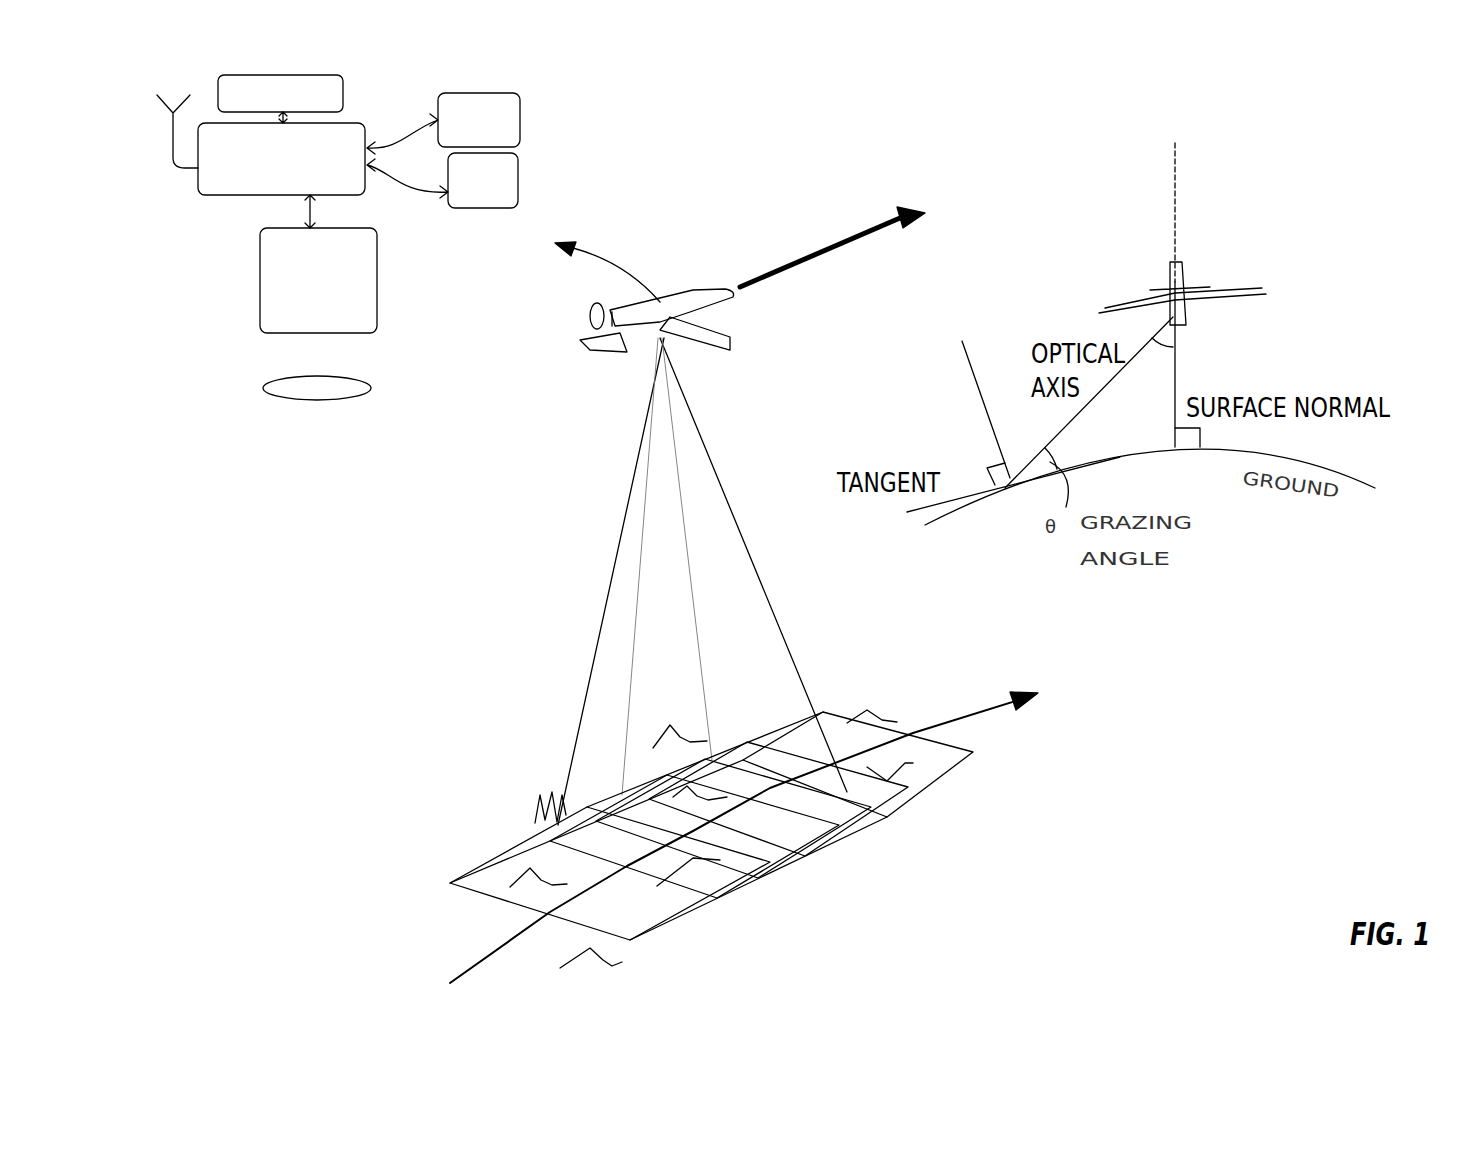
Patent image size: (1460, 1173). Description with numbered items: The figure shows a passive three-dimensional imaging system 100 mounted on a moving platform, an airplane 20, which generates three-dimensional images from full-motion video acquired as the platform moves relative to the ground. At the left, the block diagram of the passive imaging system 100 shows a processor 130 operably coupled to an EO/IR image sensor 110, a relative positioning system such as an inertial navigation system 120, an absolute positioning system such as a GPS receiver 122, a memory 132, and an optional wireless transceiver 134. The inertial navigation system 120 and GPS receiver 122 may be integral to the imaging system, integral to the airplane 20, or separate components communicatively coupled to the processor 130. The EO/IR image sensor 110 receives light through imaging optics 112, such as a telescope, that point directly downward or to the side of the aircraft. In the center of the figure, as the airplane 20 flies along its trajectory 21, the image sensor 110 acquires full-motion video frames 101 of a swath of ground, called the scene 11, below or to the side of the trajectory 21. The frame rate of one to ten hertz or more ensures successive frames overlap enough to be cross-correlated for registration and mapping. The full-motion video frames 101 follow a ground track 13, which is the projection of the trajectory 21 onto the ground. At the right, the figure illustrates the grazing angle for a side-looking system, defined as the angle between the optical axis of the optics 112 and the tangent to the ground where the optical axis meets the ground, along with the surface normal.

The passive 3D imaging system 100 is at (445, 260).
The EO/IR image sensor 110 is at (346, 280).
The imaging optics 112 is at (380, 383).
The inertial navigation system 120 is at (483, 198).
The GPS receiver 122 is at (479, 105).
The processor 130 is at (323, 172).
The memory 132 is at (304, 90).
The wireless transceiver 134 is at (149, 129).
The airplane 20 is at (923, 299).
The trajectory 21 is at (831, 244).
The ground track 13 is at (867, 829).
The scene 11 is at (756, 829).
The full-motion video frames 101 is at (823, 872).